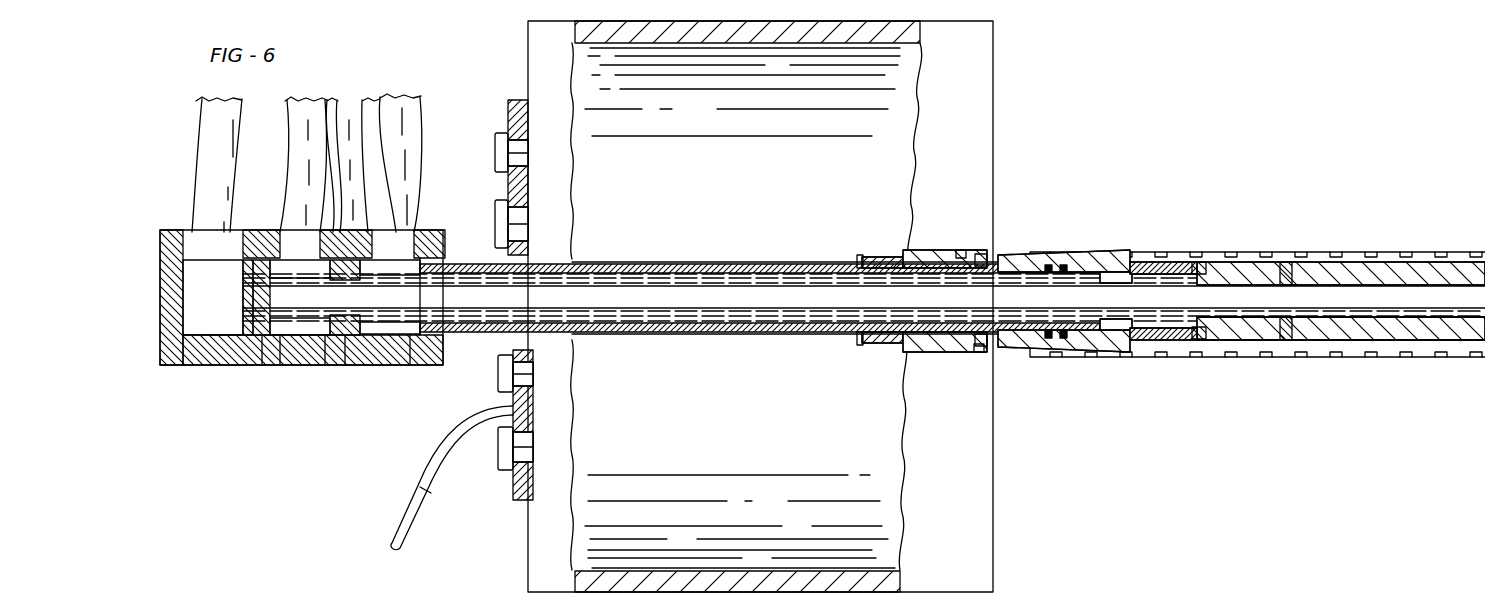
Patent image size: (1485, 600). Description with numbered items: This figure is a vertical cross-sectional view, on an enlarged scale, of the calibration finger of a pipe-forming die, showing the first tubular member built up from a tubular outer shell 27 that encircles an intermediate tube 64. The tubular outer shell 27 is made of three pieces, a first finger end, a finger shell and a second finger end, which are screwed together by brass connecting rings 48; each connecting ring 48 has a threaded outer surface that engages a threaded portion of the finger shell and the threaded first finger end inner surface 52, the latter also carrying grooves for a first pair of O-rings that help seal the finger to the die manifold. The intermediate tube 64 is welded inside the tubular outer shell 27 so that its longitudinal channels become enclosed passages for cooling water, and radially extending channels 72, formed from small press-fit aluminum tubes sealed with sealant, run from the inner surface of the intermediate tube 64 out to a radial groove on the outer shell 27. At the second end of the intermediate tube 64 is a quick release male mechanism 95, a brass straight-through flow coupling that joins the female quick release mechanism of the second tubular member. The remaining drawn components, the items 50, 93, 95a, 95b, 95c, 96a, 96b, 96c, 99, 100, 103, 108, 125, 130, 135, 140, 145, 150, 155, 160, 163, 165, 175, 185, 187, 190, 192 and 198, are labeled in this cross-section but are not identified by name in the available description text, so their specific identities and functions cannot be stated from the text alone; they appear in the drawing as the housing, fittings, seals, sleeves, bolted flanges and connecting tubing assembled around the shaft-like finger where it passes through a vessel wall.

The tubular outer shell 27 is at (1360, 258).
The connecting ring 48 is at (1182, 262).
The lower sheath wall 50 is at (1348, 340).
The first finger end inner surface 52 is at (1128, 265).
The intermediate tube 64 is at (1423, 265).
The radially extending channel 72 is at (1290, 263).
The vessel 93 is at (528, 547).
The quick release male mechanism 95 is at (164, 364).
The housing first section 95a is at (188, 366).
The housing second section 95b is at (328, 100).
The housing third section 95c is at (371, 365).
The first passage 96a is at (264, 230).
The second passage 96b is at (354, 222).
The third passage 96c is at (433, 346).
The drain hose 99 is at (413, 505).
The supply tube 100 is at (392, 88).
The return tube 103 is at (298, 143).
The inlet tube 108 is at (228, 99).
The end plate 125 is at (262, 297).
The seal hub 130 is at (264, 340).
The bushing 135 is at (306, 337).
The inner conduit 140 is at (781, 264).
The upper bearing 145 is at (407, 241).
The probe shaft tube 150 is at (723, 262).
The lower bearing 155 is at (471, 340).
The lower mounting bolts 160 is at (505, 503).
The upper mounting bolts 163 is at (500, 133).
The outer sleeve 165 is at (647, 263).
The lower hub portion 175 is at (825, 335).
The hub flange 185 is at (970, 350).
The flange bolts 187 is at (963, 253).
The tapered wedge collar 190 is at (1050, 257).
The set screws 192 is at (1062, 350).
The spacer ring 198 is at (1204, 340).